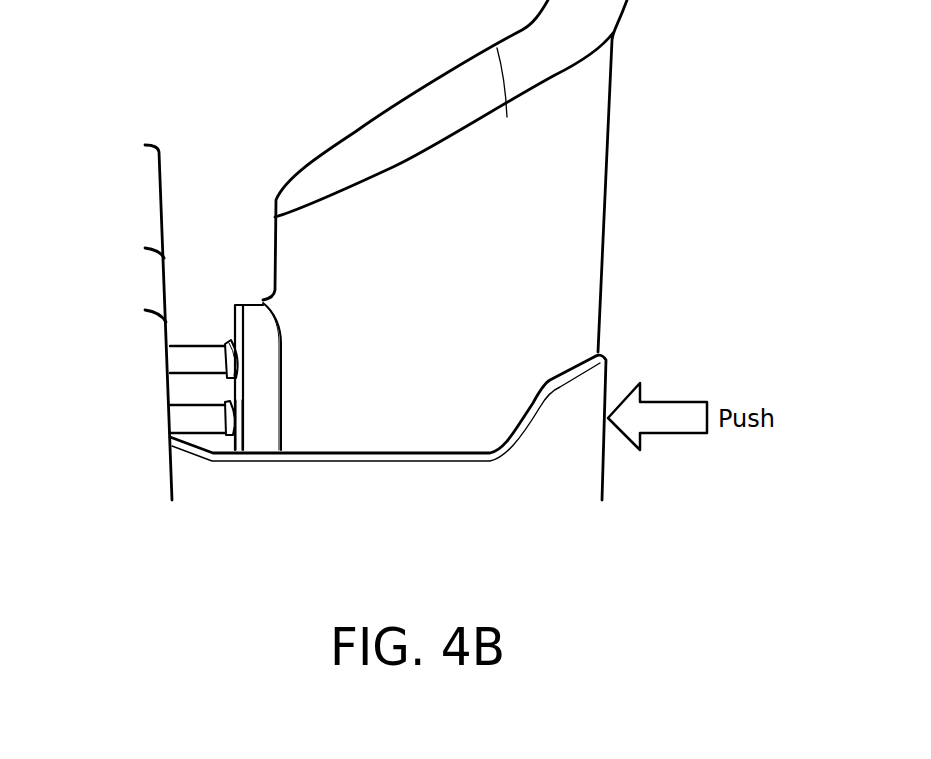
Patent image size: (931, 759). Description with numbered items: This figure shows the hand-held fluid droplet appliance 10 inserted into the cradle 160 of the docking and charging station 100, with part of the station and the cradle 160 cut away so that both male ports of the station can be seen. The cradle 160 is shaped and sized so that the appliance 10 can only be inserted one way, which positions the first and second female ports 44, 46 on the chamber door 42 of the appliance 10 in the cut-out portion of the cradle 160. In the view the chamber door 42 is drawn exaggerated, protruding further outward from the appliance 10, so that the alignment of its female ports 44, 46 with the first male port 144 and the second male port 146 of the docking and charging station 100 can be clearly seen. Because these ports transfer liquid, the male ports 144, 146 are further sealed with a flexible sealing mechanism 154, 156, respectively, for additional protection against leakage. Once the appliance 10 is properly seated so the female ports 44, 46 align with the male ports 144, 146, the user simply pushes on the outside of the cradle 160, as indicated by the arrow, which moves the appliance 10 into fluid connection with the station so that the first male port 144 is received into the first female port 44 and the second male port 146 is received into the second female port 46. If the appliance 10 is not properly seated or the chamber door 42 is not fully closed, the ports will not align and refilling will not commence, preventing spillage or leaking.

The hand-held fluid droplet appliance 10 is at (578, 233).
The chamber door 42 is at (312, 363).
The first female port 44 is at (260, 350).
The second female port 46 is at (260, 423).
The docking and charging station 100 is at (130, 194).
The first male port 144 is at (173, 360).
The second male port 146 is at (173, 420).
The flexible sealing mechanism 154 is at (240, 340).
The flexible sealing mechanism 156 is at (228, 412).
The cradle 160 is at (562, 455).